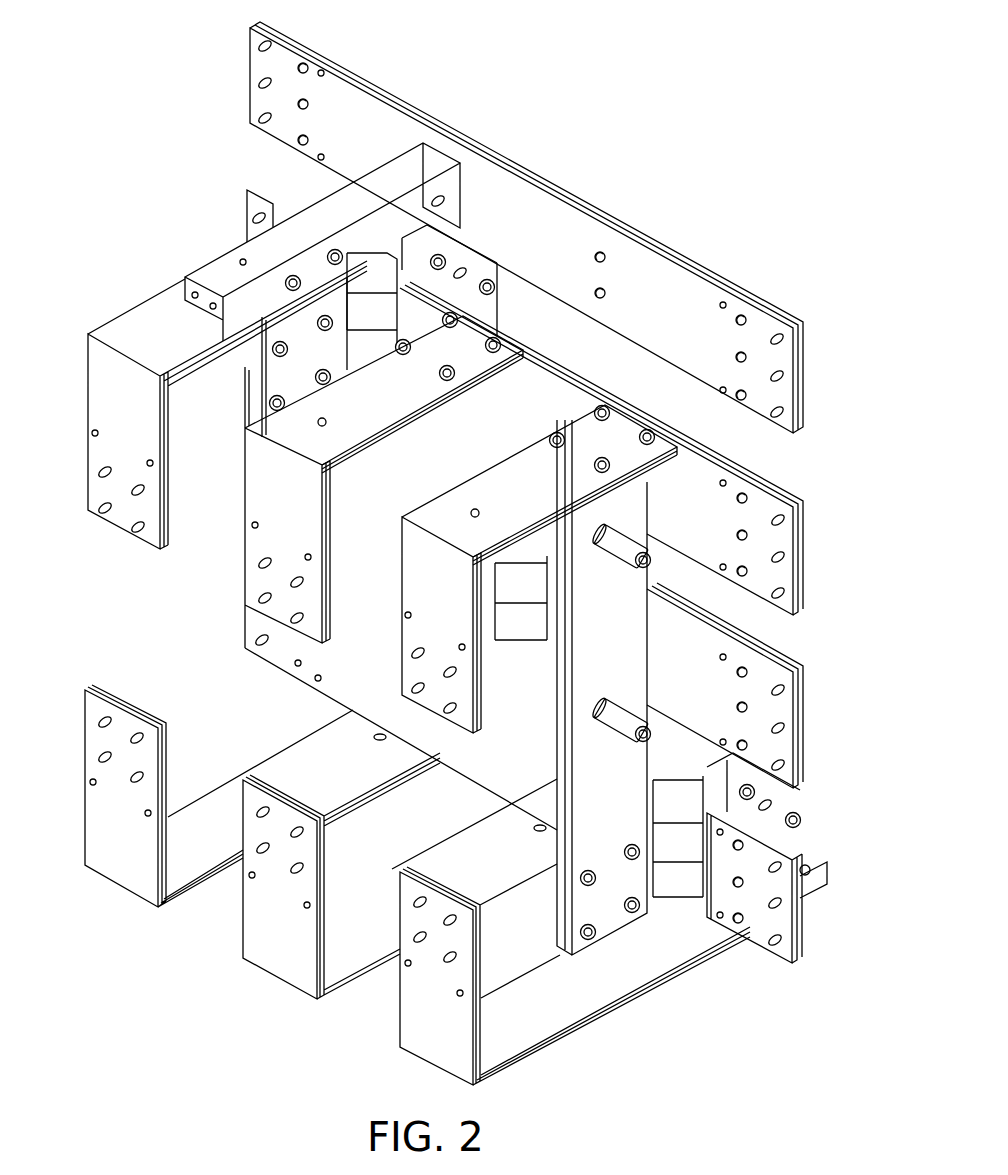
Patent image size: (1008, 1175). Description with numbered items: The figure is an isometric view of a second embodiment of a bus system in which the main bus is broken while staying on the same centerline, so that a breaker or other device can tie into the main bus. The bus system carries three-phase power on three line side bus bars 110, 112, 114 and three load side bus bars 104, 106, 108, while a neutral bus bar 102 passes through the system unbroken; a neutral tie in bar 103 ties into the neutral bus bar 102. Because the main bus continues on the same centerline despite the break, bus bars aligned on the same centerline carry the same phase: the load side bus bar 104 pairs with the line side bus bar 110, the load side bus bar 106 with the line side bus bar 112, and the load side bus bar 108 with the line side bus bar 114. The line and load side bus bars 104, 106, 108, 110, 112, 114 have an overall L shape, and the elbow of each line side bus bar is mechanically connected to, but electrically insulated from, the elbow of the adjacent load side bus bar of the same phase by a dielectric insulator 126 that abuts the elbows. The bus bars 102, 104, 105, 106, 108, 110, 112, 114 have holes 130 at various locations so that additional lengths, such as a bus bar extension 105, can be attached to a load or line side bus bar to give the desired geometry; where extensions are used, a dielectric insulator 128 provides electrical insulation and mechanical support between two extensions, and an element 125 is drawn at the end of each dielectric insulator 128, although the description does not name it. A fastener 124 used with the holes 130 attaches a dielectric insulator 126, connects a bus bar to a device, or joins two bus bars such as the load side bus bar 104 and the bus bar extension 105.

The neutral bus bar 102 is at (592, 212).
The neutral tie in bar 103 is at (323, 213).
The load side bus bar 104 is at (807, 571).
The bus bar extension 105 is at (428, 580).
The load side bus bar 106 is at (807, 738).
The load side bus bar 108 is at (802, 923).
The line side bus bar 110 is at (252, 220).
The line side bus bar 112 is at (367, 483).
The line side bus bar 114 is at (347, 648).
The fastener 124 is at (640, 912).
The nuts 125 is at (647, 564).
The dielectric insulator 126 is at (380, 277).
The dielectric insulator 128 is at (625, 545).
The holes 130 is at (780, 340).